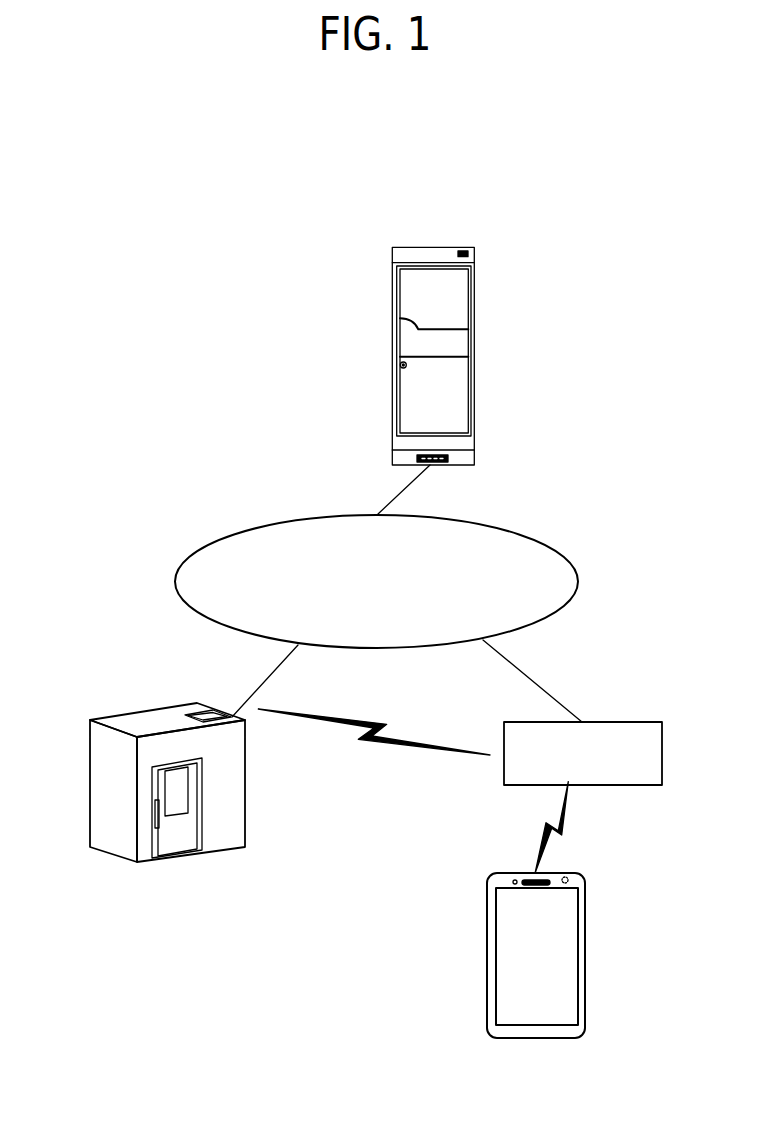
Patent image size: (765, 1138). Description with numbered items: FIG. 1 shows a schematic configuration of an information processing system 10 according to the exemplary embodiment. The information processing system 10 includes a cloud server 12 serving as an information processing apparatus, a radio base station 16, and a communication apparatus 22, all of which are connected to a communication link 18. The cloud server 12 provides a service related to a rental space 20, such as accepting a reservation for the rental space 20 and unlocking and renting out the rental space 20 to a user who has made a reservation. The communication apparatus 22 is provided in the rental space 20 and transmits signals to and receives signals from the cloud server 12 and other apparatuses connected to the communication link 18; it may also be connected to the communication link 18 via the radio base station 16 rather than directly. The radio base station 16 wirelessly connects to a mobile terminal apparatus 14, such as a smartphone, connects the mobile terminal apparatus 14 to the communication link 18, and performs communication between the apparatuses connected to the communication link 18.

The information processing system 10 is at (609, 208).
The cloud server 12 is at (440, 250).
The mobile terminal apparatus 14 is at (585, 923).
The radio base station 16 is at (615, 722).
The communication link 18 is at (573, 563).
The rental space 20 is at (118, 707).
The communication apparatus 22 is at (207, 708).